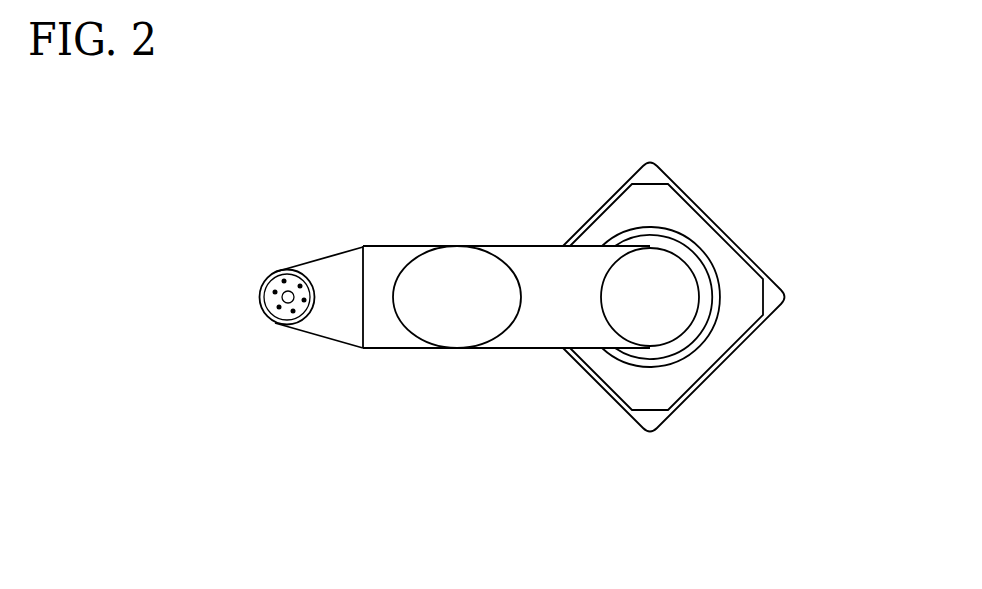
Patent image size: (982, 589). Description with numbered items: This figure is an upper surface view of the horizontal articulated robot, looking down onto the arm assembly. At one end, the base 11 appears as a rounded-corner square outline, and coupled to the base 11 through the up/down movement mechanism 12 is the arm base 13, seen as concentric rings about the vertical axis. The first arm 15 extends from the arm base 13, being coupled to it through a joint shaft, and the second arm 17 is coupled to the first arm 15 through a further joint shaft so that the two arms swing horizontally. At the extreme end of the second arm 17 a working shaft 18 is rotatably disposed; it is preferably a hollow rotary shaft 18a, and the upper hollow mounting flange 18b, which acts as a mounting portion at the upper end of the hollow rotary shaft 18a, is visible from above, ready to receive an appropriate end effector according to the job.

The base 11 is at (775, 307).
The up/down movement mechanism 12 is at (622, 210).
The arm base 13 is at (717, 278).
The first arm 15 is at (543, 272).
The second arm 17 is at (378, 267).
The working shaft 18 is at (206, 244).
The hollow rotary shaft 18a is at (282, 302).
The upper hollow mounting flange 18b is at (286, 324).